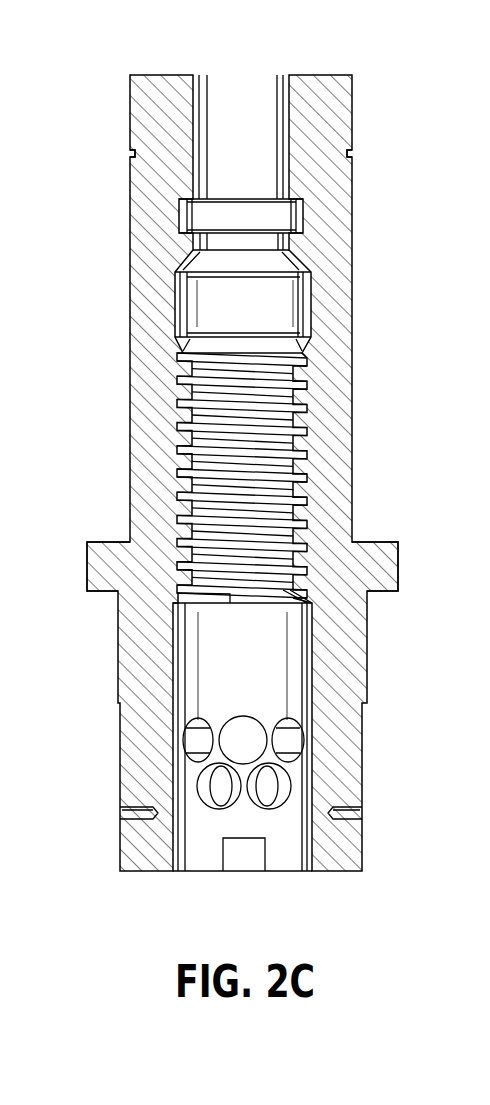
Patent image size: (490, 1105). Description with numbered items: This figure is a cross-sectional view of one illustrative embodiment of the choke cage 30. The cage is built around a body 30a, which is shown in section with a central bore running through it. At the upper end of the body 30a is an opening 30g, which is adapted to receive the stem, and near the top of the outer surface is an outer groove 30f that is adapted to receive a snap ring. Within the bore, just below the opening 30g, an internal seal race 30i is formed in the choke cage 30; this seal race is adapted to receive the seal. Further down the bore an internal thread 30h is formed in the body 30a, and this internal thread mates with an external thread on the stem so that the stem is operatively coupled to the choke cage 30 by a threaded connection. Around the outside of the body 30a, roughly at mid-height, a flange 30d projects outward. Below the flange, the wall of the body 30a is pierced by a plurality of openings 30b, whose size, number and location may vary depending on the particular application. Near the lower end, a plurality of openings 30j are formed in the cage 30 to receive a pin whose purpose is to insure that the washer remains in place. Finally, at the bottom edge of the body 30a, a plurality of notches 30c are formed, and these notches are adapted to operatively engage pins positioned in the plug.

The choke cage 30 is at (116, 181).
The body 30a is at (130, 325).
The openings 30b is at (190, 743).
The notches 30c is at (262, 853).
The flange 30d is at (95, 565).
The groove 30f is at (352, 152).
The opening 30g is at (252, 82).
The internal thread 30h is at (178, 428).
The internal seal race 30i is at (182, 217).
The openings 30j is at (357, 813).